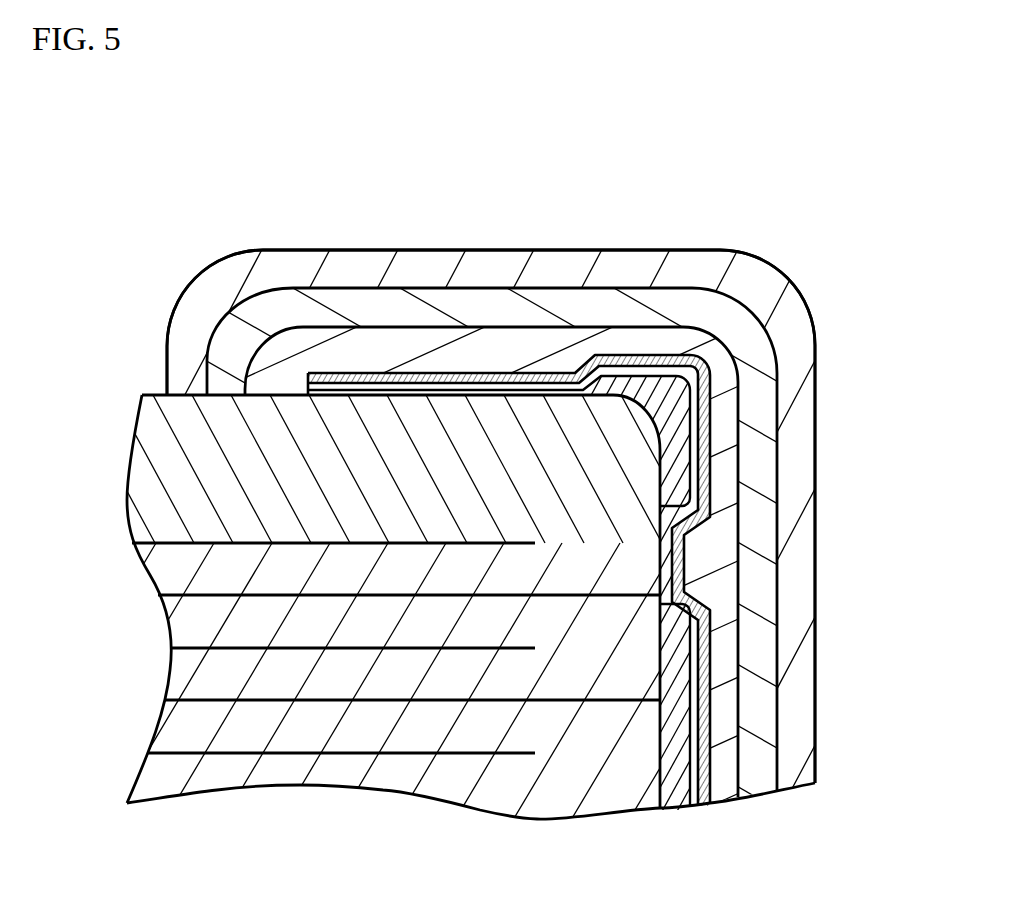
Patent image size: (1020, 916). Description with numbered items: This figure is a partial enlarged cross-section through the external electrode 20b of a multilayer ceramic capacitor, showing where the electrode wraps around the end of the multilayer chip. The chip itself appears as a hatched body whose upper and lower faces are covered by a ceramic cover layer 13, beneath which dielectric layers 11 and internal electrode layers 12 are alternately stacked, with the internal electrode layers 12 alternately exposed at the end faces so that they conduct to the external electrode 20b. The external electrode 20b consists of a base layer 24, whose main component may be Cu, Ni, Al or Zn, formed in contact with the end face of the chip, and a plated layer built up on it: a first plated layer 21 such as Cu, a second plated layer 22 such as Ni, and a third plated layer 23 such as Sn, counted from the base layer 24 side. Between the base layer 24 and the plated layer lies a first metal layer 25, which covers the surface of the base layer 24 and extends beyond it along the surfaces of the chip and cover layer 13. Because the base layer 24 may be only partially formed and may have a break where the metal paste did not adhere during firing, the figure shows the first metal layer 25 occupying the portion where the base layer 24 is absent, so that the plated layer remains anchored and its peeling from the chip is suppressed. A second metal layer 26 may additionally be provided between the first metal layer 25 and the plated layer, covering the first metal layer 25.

The dielectric layer 11 is at (217, 773).
The internal electrode layer 12 is at (337, 753).
The cover layer 13 is at (141, 470).
The external electrode 20b is at (773, 243).
The first plated layer 21 is at (372, 345).
The second plated layer 22 is at (428, 315).
The third plated layer 23 is at (483, 268).
The base layer 24 is at (677, 455).
The first metal layer 25 is at (693, 410).
The second metal layer 26 is at (702, 493).